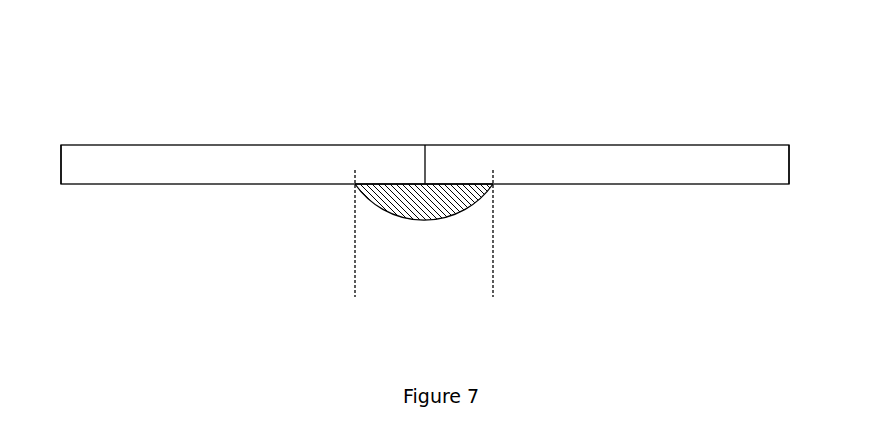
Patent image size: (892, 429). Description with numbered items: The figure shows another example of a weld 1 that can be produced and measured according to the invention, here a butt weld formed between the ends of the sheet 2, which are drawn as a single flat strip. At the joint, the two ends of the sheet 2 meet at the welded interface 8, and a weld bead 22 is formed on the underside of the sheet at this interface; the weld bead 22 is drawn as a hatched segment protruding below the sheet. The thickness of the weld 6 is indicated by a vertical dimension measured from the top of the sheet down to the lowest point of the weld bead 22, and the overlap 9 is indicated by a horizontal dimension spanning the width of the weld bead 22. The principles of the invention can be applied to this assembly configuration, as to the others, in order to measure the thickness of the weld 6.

The weld 1 is at (258, 112).
The ends of the sheet 2 is at (147, 167).
The thickness of the weld 6 is at (424, 255).
The welded interface 8 is at (400, 183).
The overlap 9 is at (355, 285).
The weld bead 22 is at (373, 208).